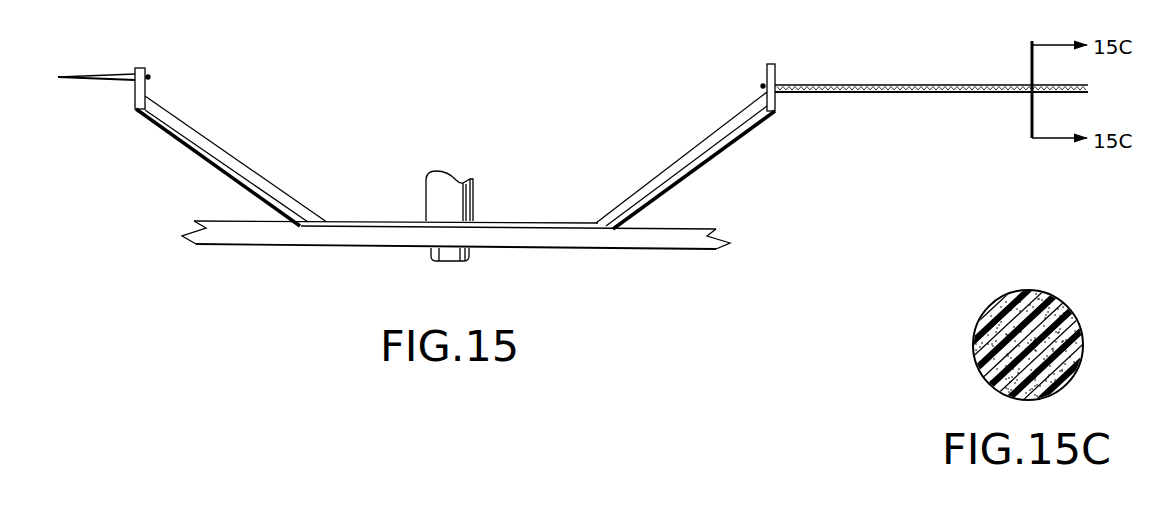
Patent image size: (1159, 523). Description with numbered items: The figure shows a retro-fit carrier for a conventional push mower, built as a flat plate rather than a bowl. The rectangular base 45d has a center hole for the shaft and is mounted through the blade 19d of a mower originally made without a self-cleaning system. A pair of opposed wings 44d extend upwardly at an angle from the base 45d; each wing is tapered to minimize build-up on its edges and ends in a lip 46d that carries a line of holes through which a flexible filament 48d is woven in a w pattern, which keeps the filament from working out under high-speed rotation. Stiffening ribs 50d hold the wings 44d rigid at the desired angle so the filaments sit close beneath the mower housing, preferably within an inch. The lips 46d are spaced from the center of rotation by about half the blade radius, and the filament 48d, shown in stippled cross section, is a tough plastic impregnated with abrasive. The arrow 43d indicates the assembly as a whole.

In FIG. 15, the blade 19d is at (236, 236).
In FIG. 15, the support assembly 43d is at (166, 149).
In FIG. 15, the wings 44d is at (173, 130).
In FIG. 15, the base 45d is at (349, 212).
In FIG. 15, the lip 46d is at (139, 66).
In FIG. 15, the flexible filament 48d is at (880, 75).
In FIG. 15C, the flexible filament 48d is at (965, 334).
In FIG. 15, the stiffening ribs 50d is at (246, 164).